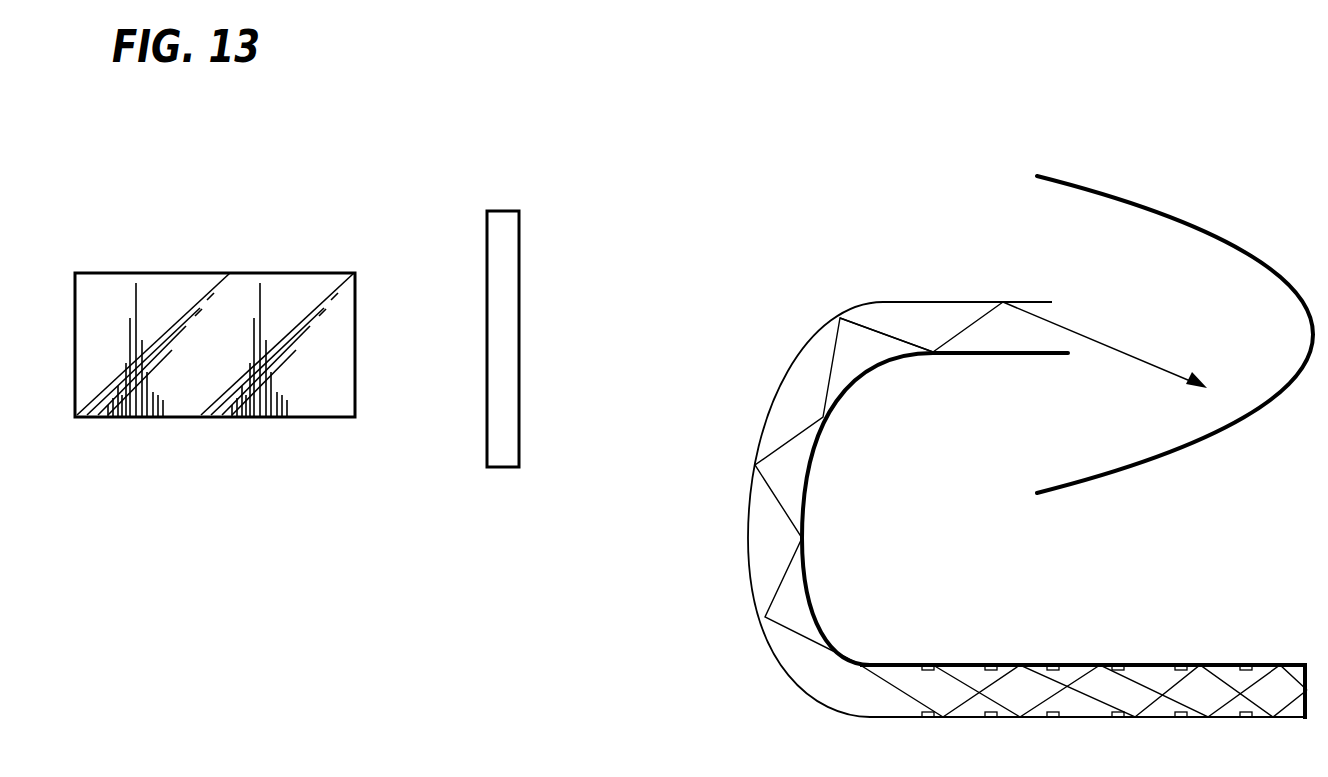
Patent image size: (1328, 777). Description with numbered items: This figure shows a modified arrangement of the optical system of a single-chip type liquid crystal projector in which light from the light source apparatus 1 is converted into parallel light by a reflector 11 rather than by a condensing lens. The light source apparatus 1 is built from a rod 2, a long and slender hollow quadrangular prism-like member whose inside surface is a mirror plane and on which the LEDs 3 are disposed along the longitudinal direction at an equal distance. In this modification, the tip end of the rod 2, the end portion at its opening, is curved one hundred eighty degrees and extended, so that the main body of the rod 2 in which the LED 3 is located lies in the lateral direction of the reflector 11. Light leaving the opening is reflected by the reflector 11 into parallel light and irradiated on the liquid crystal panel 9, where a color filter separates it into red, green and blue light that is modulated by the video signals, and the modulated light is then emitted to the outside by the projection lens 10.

The light source apparatus 1 is at (1122, 660).
The rod 2 is at (952, 357).
The LED 3 is at (915, 666).
The liquid crystal panel 9 is at (502, 210).
The projection lens 10 is at (217, 272).
The reflector 11 is at (1127, 195).